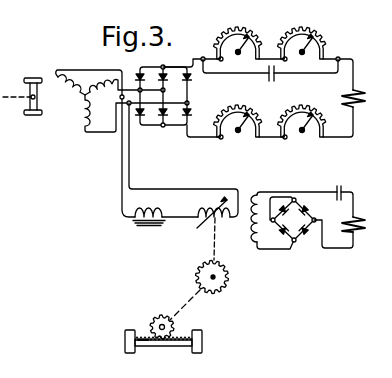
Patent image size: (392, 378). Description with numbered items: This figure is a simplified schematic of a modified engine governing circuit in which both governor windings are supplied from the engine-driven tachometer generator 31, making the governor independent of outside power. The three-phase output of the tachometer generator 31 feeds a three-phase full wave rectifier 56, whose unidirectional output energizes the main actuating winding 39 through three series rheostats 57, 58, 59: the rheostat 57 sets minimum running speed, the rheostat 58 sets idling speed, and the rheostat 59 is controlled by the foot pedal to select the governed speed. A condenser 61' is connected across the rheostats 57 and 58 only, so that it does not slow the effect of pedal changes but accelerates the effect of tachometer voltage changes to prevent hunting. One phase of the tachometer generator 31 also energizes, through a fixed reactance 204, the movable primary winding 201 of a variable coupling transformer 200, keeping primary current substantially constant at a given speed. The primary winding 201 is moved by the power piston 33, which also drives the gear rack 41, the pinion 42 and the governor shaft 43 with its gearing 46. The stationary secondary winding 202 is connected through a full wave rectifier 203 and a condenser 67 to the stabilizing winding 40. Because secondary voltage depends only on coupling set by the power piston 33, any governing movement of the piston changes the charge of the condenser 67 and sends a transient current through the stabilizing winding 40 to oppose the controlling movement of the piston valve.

The tachometer generator 31 is at (49, 67).
The power piston 33 is at (203, 340).
The main actuating winding 39 is at (356, 92).
The stabilizing winding 40 is at (364, 229).
The gear rack 41 is at (143, 338).
The pinion 42 is at (163, 323).
The governor shaft 43 is at (189, 305).
The gearing 46 is at (228, 282).
The three-phase full wave rectifier 56 is at (180, 99).
The rheostat 57 is at (254, 40).
The rheostat 58 is at (325, 42).
The rheostat 59 is at (255, 118).
The condenser 61' is at (270, 77).
The condenser 67 is at (340, 186).
The variable coupling transformer 200 is at (238, 235).
The movable primary winding 201 is at (201, 212).
The stationary secondary winding 202 is at (288, 230).
The full wave rectifier 203 is at (298, 242).
The fixed reactance 204 is at (133, 217).